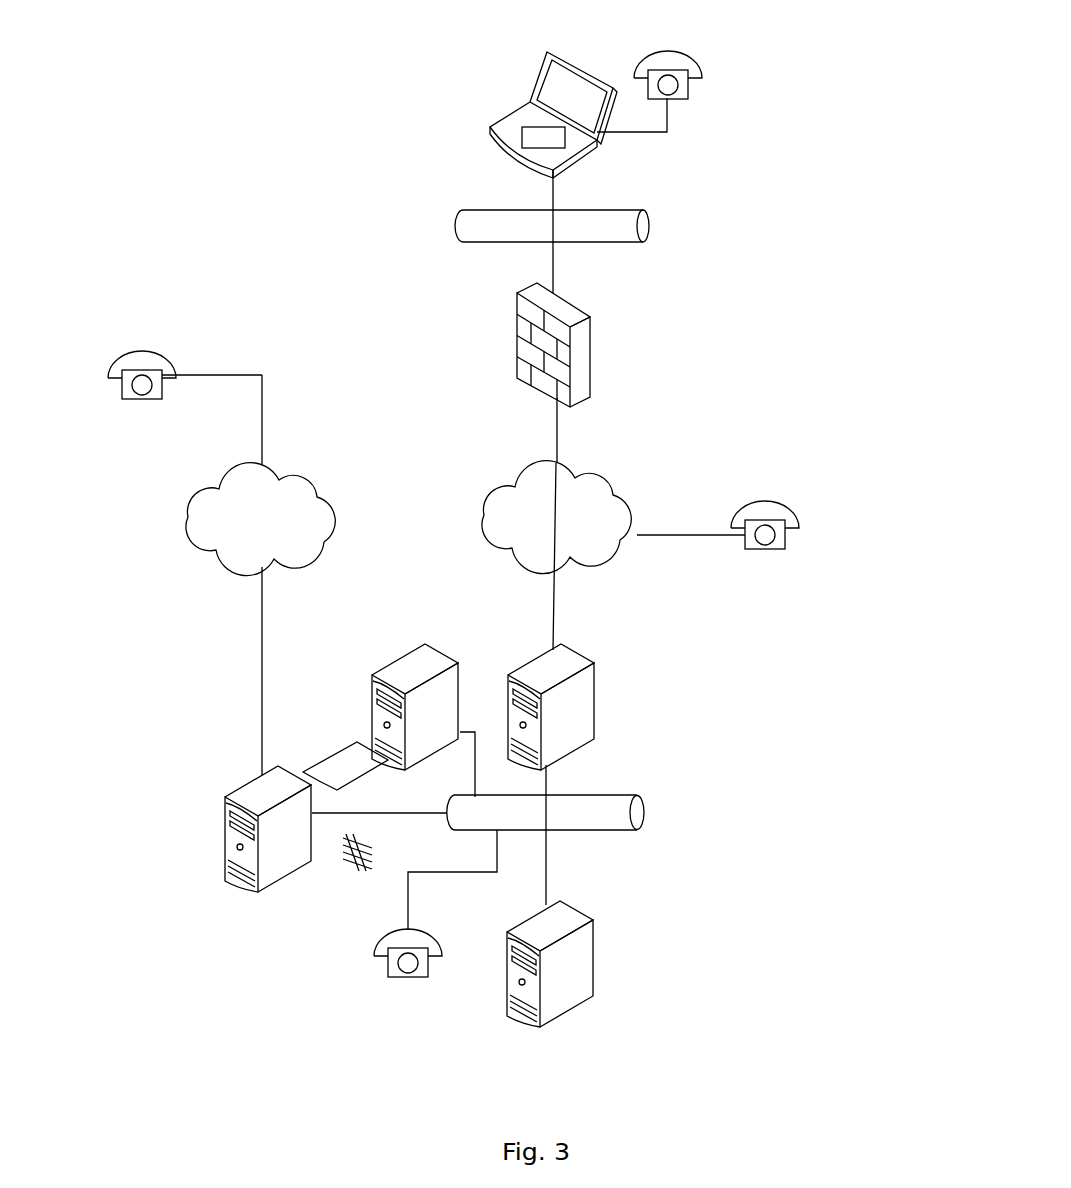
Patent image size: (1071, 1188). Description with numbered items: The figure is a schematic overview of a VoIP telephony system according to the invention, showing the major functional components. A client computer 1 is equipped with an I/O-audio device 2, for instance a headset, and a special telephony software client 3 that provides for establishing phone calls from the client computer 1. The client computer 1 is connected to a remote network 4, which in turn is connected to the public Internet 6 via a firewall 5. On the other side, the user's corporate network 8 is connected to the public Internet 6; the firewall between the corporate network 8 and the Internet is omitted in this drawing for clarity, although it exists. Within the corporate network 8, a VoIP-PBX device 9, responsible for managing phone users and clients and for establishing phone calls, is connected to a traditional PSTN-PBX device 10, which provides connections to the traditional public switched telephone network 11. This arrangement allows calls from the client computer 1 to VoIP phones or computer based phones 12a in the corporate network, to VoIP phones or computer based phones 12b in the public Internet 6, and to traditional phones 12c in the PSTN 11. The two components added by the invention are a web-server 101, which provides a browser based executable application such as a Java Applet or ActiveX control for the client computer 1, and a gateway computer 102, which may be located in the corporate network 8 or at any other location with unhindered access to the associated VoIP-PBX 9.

The client computer 1 is at (503, 87).
The I/O-audio device 2 is at (792, 57).
The telephony software client 3 is at (513, 137).
The remote network 4 is at (650, 198).
The firewall 5 is at (667, 298).
The public Internet 6 is at (623, 460).
The corporate network 8 is at (657, 800).
The VoIP-PBX device 9 is at (610, 957).
The PSTN-PBX device 10 is at (222, 878).
The public switched telephone network (PSTN) 11 is at (192, 540).
The VoIP phones or computer based phones in corporate network 12a is at (383, 993).
The VoIP phones or computer based phones in public Internet 12b is at (803, 503).
The traditional phones in PSTN 12c is at (177, 353).
The web-server 101 is at (350, 708).
The gateway computer 102 is at (605, 703).